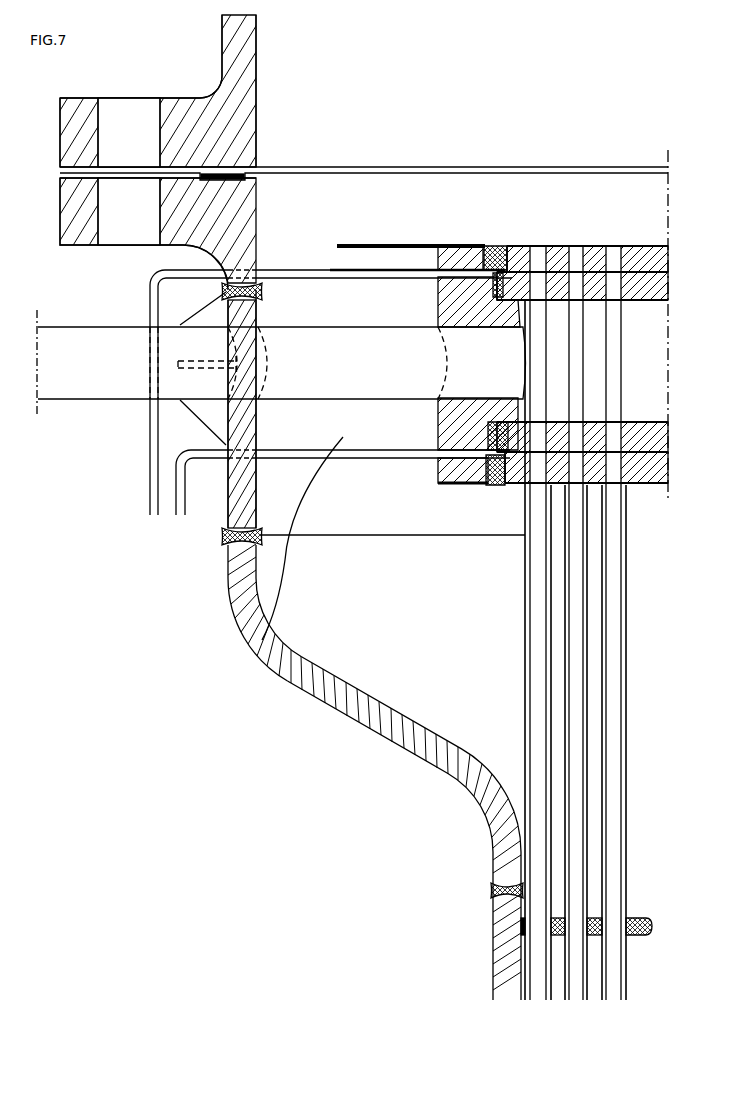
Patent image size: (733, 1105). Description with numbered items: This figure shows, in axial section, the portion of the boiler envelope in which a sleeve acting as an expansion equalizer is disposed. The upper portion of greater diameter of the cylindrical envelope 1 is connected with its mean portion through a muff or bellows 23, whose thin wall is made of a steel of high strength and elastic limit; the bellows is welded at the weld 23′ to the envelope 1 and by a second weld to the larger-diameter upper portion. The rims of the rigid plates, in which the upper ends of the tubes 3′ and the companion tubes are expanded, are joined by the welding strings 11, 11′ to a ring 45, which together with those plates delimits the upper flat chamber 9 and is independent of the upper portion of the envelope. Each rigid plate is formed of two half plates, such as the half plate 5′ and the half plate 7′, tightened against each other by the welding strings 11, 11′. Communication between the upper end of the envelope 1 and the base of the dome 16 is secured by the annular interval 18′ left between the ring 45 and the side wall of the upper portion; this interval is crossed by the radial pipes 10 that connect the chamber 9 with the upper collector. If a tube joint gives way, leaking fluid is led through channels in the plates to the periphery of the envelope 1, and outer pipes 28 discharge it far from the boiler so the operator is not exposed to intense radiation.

The cylindrical envelope 1 is at (510, 950).
The tubes 3′ is at (552, 620).
The half plate 5′ is at (655, 264).
The half plate 7′ is at (660, 440).
The upper flat chamber 9 is at (645, 366).
The radial pipes 10 is at (353, 342).
The welding string 11 is at (495, 250).
The welding string 11′ is at (498, 486).
The dome 16 is at (246, 64).
The annular interval 18′ is at (246, 622).
The muff or bellows 23 is at (338, 693).
The weld 23′ is at (491, 889).
The outer pipes 28 is at (178, 490).
The ring 45 is at (450, 412).